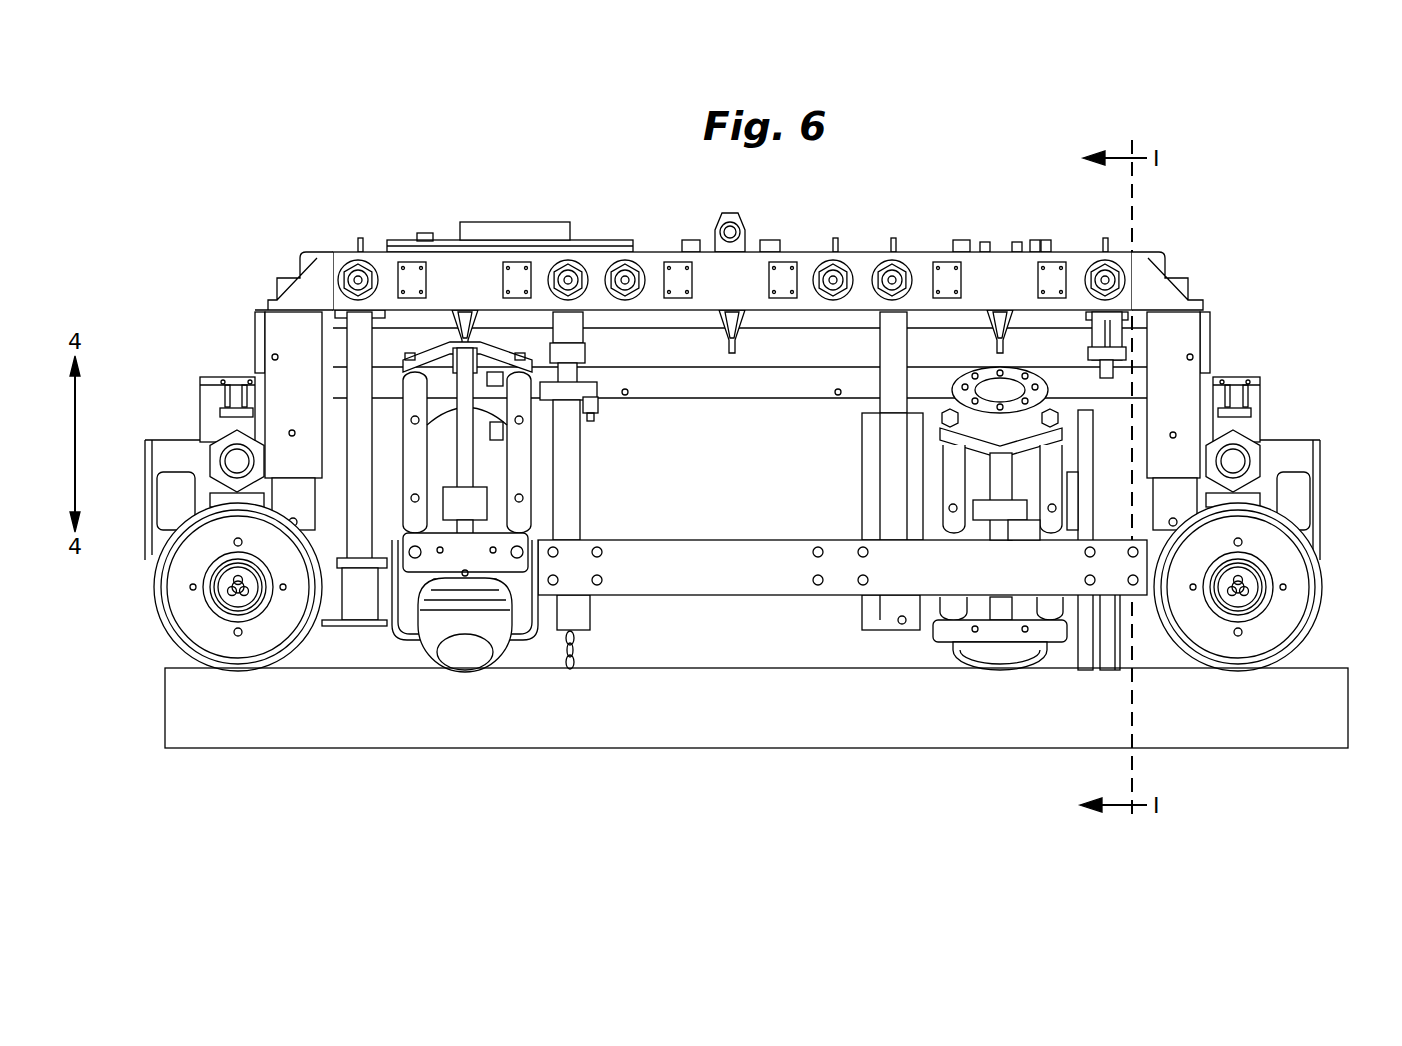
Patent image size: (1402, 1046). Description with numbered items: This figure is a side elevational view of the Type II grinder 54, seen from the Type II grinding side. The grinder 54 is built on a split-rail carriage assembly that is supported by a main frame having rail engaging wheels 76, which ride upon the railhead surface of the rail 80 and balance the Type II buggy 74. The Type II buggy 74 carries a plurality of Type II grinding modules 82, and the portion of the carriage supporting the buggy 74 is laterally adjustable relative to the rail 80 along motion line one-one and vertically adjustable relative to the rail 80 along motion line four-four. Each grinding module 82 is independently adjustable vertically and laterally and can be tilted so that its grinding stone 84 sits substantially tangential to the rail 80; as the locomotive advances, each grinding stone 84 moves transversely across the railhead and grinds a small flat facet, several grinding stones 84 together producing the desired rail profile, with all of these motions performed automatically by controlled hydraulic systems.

The Type II grinder 54 is at (917, 150).
The Type II buggy 74 is at (651, 245).
The rail engaging wheels 76 is at (193, 625).
The rail 80 is at (602, 738).
The Type II grinding module 82 is at (945, 458).
The grinding stone 84 is at (425, 657).